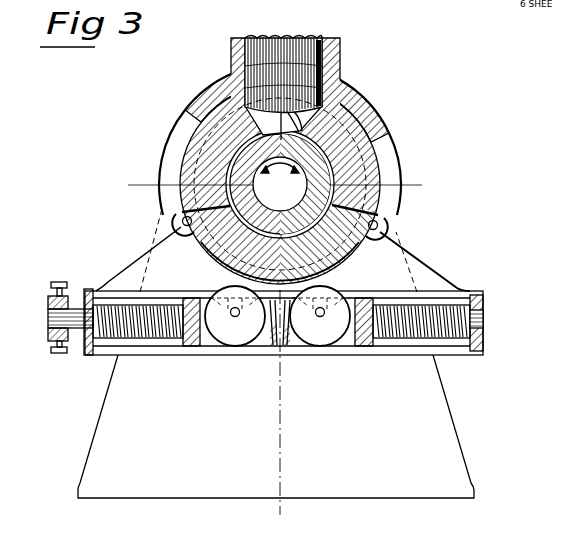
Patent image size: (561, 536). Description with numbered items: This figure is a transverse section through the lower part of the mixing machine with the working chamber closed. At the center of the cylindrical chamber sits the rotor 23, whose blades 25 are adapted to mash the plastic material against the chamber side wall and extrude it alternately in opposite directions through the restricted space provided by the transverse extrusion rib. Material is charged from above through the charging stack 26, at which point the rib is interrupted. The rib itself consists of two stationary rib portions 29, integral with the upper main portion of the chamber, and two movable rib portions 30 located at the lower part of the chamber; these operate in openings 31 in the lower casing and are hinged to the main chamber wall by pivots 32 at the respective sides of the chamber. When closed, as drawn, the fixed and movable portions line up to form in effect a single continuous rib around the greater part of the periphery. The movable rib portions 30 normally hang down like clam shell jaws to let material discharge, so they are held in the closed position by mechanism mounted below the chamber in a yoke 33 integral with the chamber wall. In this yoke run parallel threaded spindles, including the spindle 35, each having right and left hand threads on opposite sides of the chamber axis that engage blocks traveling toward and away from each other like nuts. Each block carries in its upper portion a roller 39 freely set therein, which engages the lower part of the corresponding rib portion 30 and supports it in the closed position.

The rotor 23 is at (370, 142).
The blades 25 is at (337, 112).
The charging stack 26 is at (342, 58).
The stationary rib portions 29 is at (220, 163).
The movable rib portions 30 is at (203, 237).
The openings 31 is at (330, 263).
The hinges or pivots 32 is at (173, 217).
The yoke 33 is at (447, 267).
The threaded spindle 35 is at (420, 337).
The roller 39 is at (317, 337).